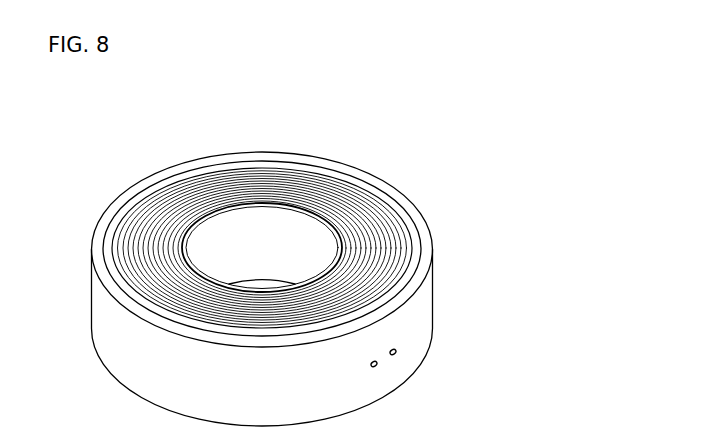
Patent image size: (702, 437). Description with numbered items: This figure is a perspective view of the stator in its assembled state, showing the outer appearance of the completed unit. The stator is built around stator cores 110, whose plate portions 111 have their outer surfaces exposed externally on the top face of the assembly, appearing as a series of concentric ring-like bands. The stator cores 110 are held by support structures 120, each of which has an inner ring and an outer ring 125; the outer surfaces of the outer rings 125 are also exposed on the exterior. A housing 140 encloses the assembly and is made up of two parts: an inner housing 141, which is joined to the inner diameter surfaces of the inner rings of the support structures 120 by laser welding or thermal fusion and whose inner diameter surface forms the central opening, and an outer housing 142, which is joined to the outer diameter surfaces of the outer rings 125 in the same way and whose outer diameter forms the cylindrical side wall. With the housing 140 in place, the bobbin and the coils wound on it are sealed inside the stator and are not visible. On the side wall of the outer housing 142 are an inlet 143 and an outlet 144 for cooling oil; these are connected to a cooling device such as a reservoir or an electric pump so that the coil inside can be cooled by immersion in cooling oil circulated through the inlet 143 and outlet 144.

The stator core 110 is at (223, 178).
The plate portion 111 is at (268, 168).
The support structure 120 is at (130, 195).
The outer ring 125 is at (165, 185).
The housing 140 is at (333, 313).
The inner housing 141 is at (318, 232).
The outer housing 142 is at (423, 300).
The inlet 143 is at (377, 368).
The outlet 144 is at (398, 353).